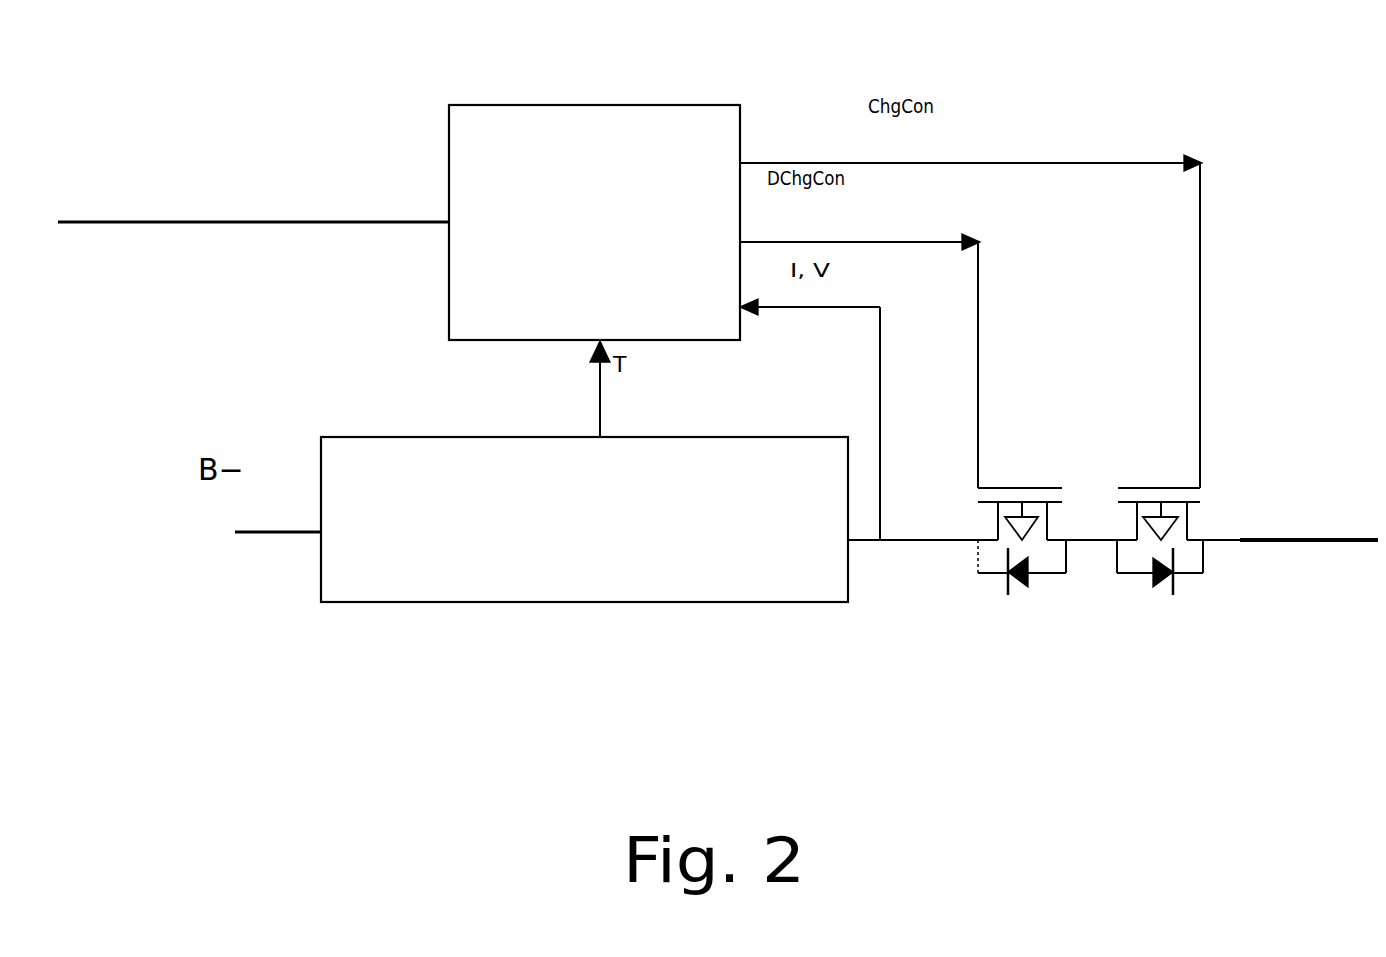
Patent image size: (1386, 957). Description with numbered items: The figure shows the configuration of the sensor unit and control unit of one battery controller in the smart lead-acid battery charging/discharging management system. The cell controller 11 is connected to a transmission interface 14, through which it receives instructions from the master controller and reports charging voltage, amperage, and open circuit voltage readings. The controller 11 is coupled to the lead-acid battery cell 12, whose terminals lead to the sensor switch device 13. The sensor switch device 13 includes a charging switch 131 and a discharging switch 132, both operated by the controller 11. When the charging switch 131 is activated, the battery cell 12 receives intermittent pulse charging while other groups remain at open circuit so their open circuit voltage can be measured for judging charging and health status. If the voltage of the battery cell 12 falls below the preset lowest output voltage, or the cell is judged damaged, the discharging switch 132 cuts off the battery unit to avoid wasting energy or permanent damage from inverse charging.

The cell controller 11 is at (535, 120).
The lead-acid battery cell 12 is at (410, 580).
The sensor switch device 13 is at (1137, 563).
The transmission interface 14 is at (183, 222).
The charging switch 131 is at (1162, 603).
The discharging switch 132 is at (1008, 602).